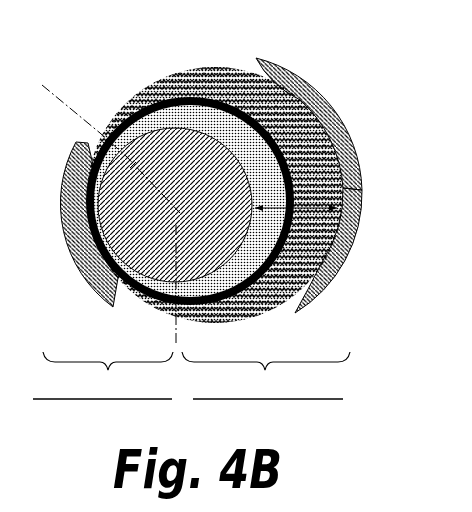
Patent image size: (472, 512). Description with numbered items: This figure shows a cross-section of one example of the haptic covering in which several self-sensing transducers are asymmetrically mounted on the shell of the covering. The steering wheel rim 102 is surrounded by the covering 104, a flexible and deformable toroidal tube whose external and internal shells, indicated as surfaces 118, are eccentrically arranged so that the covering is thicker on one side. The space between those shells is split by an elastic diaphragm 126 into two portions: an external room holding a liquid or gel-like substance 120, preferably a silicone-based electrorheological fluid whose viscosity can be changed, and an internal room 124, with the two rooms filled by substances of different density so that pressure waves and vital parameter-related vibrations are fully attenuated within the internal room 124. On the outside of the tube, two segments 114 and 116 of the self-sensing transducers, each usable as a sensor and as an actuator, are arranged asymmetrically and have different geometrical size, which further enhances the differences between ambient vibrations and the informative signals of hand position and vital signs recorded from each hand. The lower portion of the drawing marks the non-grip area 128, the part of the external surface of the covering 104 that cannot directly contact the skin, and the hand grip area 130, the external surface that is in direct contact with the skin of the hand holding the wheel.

The steering wheel rim 102 is at (175, 166).
The covering 104 is at (305, 208).
The segment of self-sensing transducer 114 is at (80, 157).
The segment of self-sensing transducer 116 is at (286, 80).
The surfaces of external and internal shells 118 is at (352, 209).
The liquid or gel-like substance (external room) 120 is at (288, 132).
The internal room 124 is at (272, 188).
The elastic diaphragm 126 is at (283, 156).
The non-grip area 128 is at (108, 355).
The hand grip area 130 is at (275, 353).